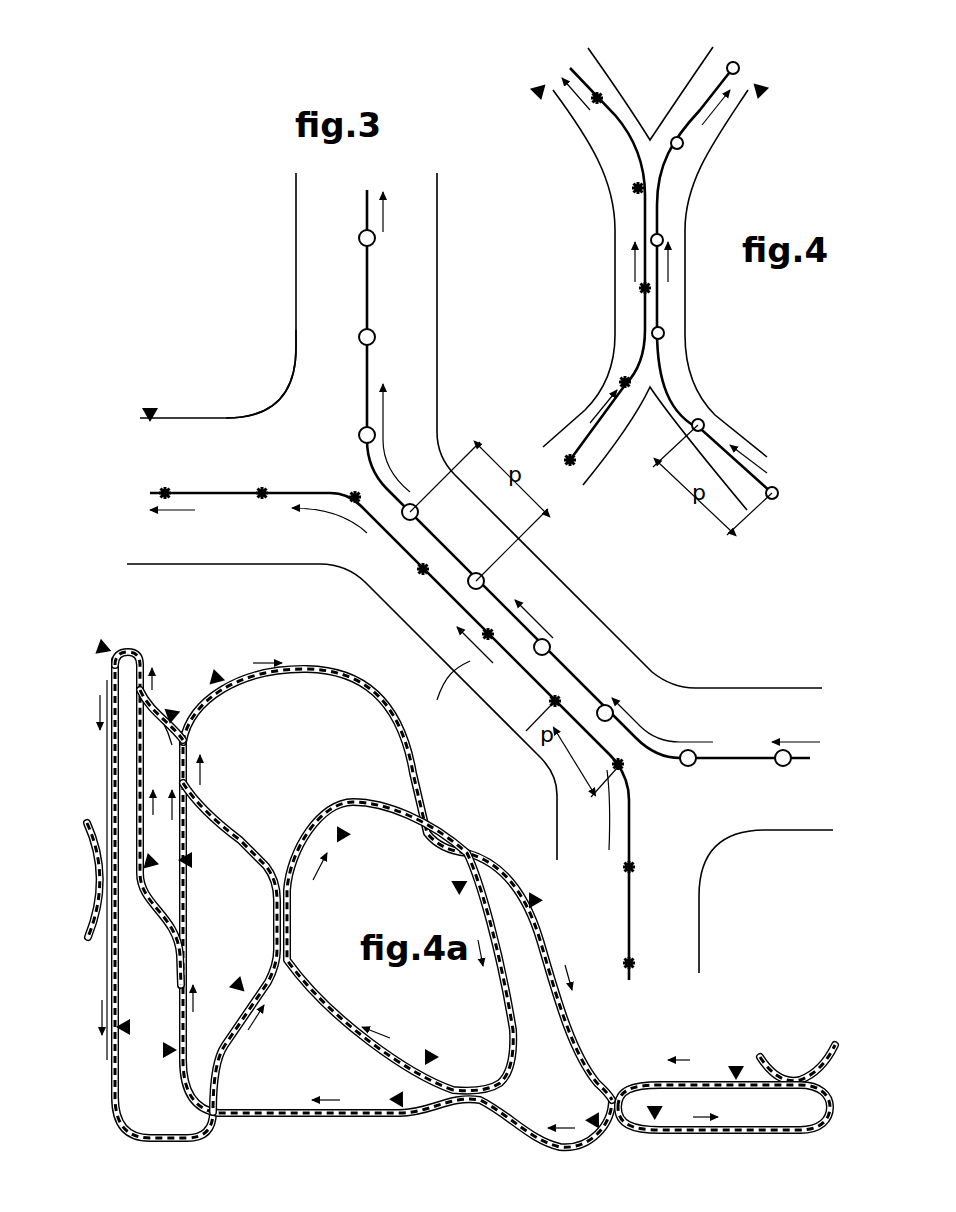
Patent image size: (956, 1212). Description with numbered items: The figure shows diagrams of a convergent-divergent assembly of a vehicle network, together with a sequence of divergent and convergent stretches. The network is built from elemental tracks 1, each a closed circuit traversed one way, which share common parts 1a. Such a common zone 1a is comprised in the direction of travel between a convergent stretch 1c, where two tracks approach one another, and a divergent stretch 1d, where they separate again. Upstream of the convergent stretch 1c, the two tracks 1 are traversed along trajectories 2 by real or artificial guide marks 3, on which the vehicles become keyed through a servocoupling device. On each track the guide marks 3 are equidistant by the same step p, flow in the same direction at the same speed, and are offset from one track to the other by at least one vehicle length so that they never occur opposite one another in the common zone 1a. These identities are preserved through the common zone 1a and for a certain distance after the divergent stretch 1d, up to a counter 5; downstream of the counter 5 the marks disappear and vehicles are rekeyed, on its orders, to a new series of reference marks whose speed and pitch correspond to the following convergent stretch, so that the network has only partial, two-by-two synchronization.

In FIG. 3, the elemental track 1 is at (178, 548).
In FIG. 4, the elemental track 1 is at (592, 134).
In FIG. 4A, the elemental track 1 is at (110, 778).
In FIG. 3, the common zone 1a is at (445, 685).
In FIG. 4, the common zone 1a is at (686, 272).
In FIG. 4A, the common zone 1a is at (380, 880).
In FIG. 3, the convergent stretch 1c is at (720, 832).
In FIG. 4, the convergent stretch 1c is at (650, 392).
In FIG. 4A, the convergent stretch 1c is at (281, 985).
In FIG. 3, the divergent stretch 1d is at (284, 424).
In FIG. 4, the divergent stretch 1d is at (650, 132).
In FIG. 4A, the divergent stretch 1d is at (278, 876).
In FIG. 3, the trajectory 2 is at (727, 757).
In FIG. 4, the trajectory 2 is at (638, 222).
In FIG. 4A, the trajectory 2 is at (305, 840).
In FIG. 3, the guide mark 3 is at (262, 502).
In FIG. 4, the guide mark 3 is at (682, 145).
In FIG. 4A, the guide mark 3 is at (207, 800).
In FIG. 3, the counter 5 is at (146, 403).
In FIG. 4, the counter 5 is at (530, 100).
In FIG. 4A, the counter 5 is at (419, 872).